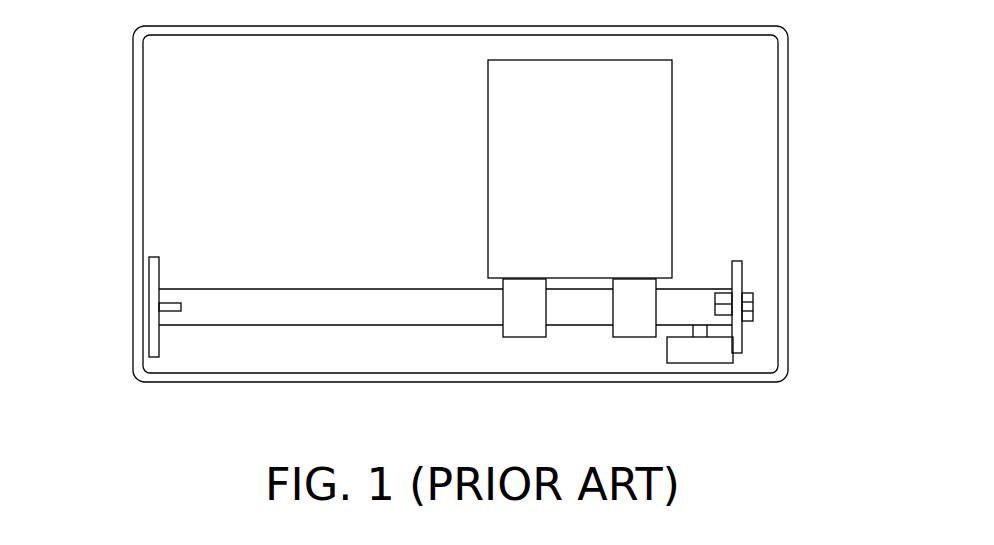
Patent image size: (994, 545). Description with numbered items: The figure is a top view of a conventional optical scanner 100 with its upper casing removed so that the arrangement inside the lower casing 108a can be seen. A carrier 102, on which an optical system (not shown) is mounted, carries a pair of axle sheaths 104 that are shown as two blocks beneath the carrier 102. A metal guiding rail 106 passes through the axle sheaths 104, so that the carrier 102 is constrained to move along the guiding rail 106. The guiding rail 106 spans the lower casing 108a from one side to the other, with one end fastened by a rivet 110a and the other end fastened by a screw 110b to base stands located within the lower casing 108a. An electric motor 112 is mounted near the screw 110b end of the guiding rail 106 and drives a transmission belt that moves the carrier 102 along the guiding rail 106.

The conventional scanner 100 is at (850, 106).
The carrier 102 is at (656, 190).
The axle sheaths 104 is at (532, 323).
The guiding rail 106 is at (305, 298).
The lower casing 108a is at (782, 237).
The rivet 110a is at (149, 297).
The screw 110b is at (750, 305).
The electric motor 112 is at (710, 350).